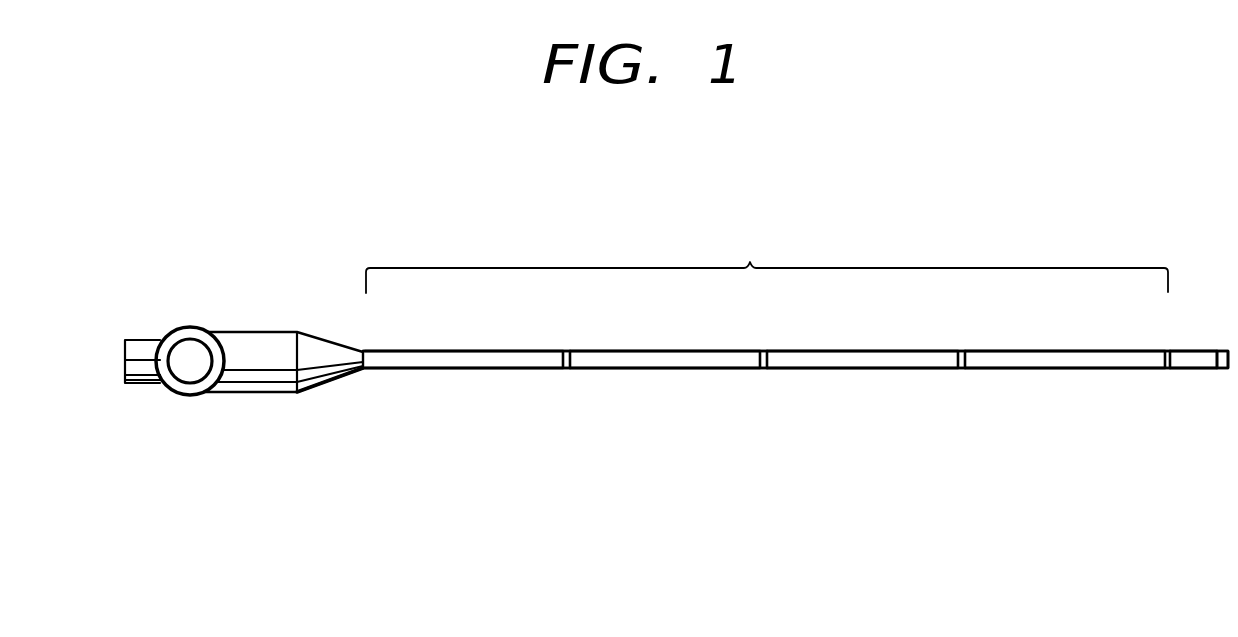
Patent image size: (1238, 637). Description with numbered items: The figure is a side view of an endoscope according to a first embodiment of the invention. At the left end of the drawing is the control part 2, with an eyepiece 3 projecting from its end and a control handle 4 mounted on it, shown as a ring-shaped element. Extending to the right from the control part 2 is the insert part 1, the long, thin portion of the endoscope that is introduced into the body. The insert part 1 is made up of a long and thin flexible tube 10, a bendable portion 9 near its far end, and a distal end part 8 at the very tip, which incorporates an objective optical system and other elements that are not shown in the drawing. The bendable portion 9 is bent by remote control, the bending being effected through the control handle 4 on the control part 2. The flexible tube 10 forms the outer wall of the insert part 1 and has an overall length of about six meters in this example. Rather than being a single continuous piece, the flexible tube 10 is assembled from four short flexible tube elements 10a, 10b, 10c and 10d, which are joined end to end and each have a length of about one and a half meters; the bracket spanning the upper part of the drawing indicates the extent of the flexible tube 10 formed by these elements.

The insert part 1 is at (1091, 400).
The control part 2 is at (263, 338).
The eyepiece 3 is at (145, 337).
The control handle 4 is at (191, 389).
The distal end part 8 is at (1222, 369).
The bendable portion 9 is at (1185, 369).
The flexible tube 10 is at (790, 296).
The flexible tube element 10a is at (1032, 369).
The flexible tube element 10b is at (852, 369).
The flexible tube element 10c is at (687, 369).
The flexible tube element 10d is at (503, 369).